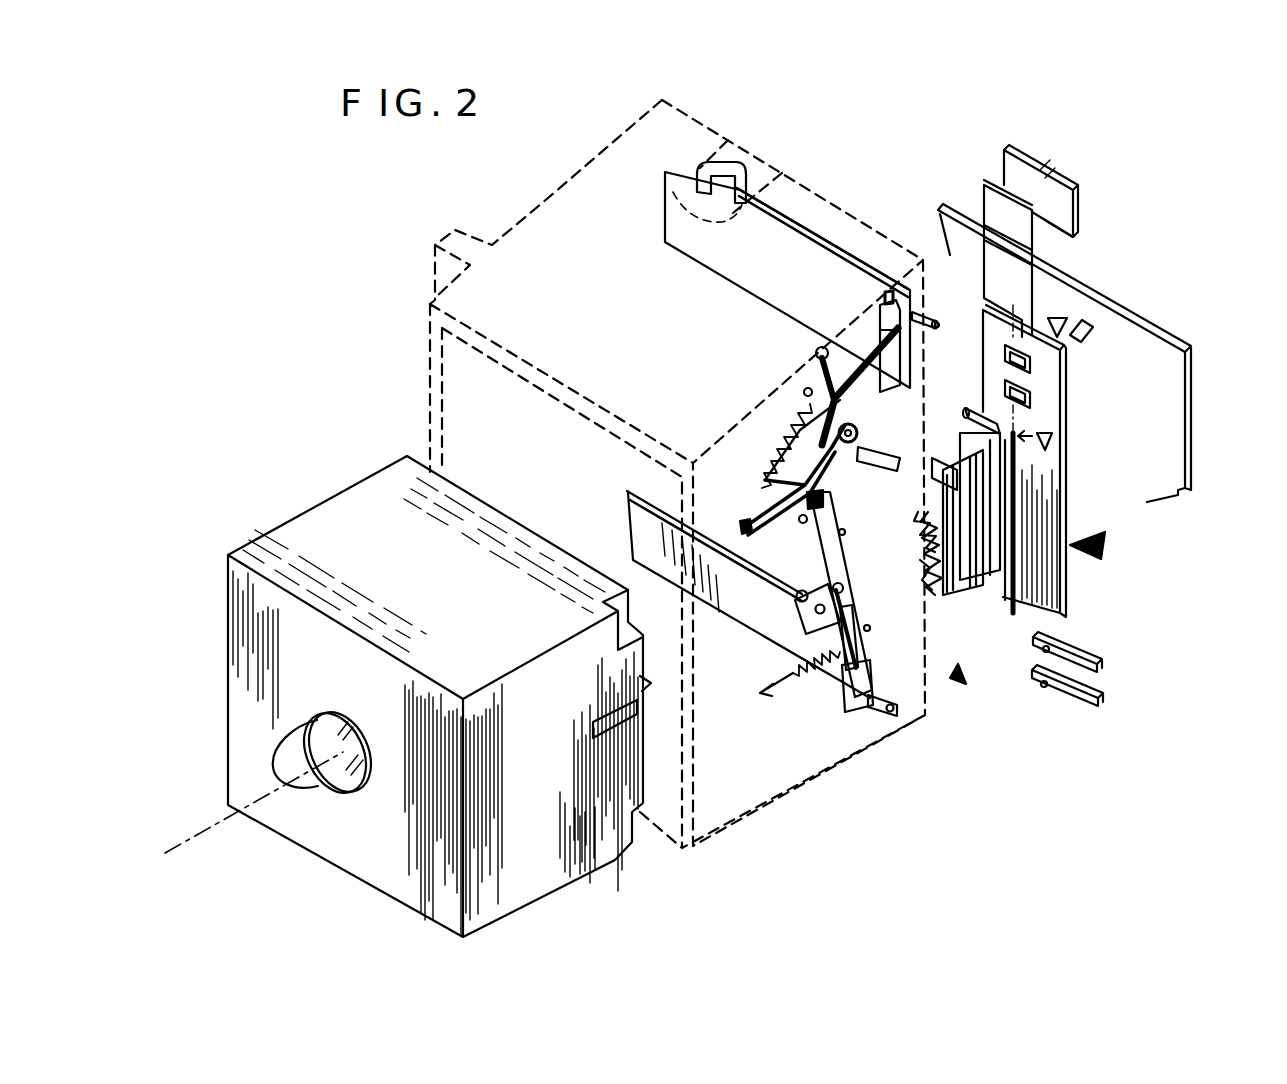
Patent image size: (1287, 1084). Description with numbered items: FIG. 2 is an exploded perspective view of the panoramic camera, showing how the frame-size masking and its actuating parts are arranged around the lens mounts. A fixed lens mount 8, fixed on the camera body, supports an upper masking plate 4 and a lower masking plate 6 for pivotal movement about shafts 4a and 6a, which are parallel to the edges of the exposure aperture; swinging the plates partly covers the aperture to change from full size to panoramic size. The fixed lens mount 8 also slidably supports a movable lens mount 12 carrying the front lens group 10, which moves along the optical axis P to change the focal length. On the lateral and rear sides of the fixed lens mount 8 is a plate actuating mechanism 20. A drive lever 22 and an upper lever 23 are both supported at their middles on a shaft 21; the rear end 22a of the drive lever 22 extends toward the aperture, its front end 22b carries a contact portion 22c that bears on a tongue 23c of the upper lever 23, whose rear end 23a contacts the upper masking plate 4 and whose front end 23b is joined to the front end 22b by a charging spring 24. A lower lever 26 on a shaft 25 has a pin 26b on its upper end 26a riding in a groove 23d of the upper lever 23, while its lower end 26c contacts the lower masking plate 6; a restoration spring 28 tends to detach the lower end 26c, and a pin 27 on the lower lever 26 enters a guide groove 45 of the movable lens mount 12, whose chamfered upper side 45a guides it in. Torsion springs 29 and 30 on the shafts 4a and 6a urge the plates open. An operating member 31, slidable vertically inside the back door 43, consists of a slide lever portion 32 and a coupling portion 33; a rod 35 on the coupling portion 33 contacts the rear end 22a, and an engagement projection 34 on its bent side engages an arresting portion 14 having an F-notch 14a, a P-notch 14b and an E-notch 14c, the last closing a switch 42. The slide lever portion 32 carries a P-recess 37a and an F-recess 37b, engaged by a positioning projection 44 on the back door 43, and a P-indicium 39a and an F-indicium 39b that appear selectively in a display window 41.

The upper masking plate 4 is at (697, 249).
The shaft 4a is at (934, 308).
The lower masking plate 6 is at (639, 530).
The shaft 6a is at (885, 718).
The fixed lens mount 8 is at (552, 198).
The front lens group 10 is at (362, 772).
The movable lens mount 12 is at (292, 527).
The arresting portion 14 is at (963, 558).
The F-notch 14a is at (950, 592).
The P-notch 14b is at (845, 589).
The E-notch 14c is at (918, 580).
The plate actuating mechanism 20 is at (962, 675).
The shaft 21 is at (858, 446).
The drive lever 22 is at (888, 415).
The rear end of drive lever 22a is at (898, 458).
The front end of drive lever 22b is at (866, 362).
The contact portion 22c is at (840, 385).
The upper lever 23 is at (778, 455).
The rear end of upper lever 23a is at (888, 290).
The front end of upper lever 23b is at (742, 520).
The tongue 23c is at (803, 388).
The groove 23d is at (802, 524).
The charging spring 24 is at (767, 410).
The shaft 25 is at (869, 630).
The lower lever 26 is at (852, 570).
The upper end of lower lever 26a is at (823, 507).
The pin 26b is at (845, 531).
The lower end of lower lever 26c is at (853, 692).
The pin 27 is at (796, 598).
The restoration spring 28 is at (803, 675).
The torsion spring 29 is at (930, 327).
The torsion spring 30 is at (895, 710).
The operating member 31 is at (1100, 548).
The slide lever portion 32 is at (1050, 422).
The coupling portion 33 is at (1025, 640).
The engagement projection 34 is at (950, 490).
The rod 35 is at (972, 407).
The P-recess 37a is at (1033, 367).
The F-recess 37b is at (1032, 397).
The P-indicium 39a is at (1075, 228).
The F-indicium 39b is at (1034, 243).
The display window 41 is at (1043, 170).
The switch 42 is at (1077, 657).
The back door 43 is at (1168, 352).
The positioning projection 44 is at (1090, 322).
The guide groove 45 is at (592, 728).
The upper side of entrance of guide groove 45a is at (648, 688).
The optical axis P is at (231, 818).